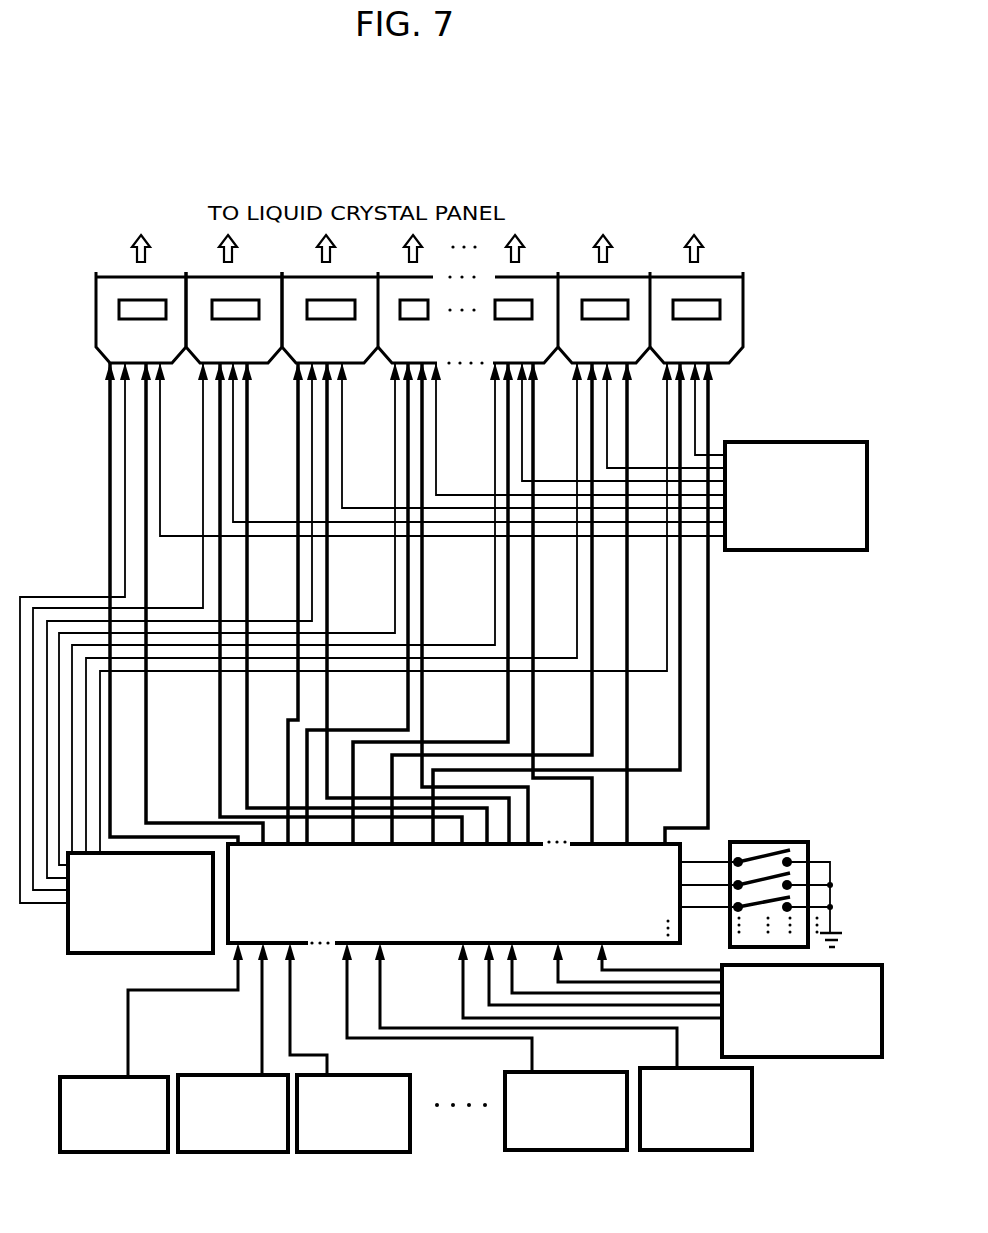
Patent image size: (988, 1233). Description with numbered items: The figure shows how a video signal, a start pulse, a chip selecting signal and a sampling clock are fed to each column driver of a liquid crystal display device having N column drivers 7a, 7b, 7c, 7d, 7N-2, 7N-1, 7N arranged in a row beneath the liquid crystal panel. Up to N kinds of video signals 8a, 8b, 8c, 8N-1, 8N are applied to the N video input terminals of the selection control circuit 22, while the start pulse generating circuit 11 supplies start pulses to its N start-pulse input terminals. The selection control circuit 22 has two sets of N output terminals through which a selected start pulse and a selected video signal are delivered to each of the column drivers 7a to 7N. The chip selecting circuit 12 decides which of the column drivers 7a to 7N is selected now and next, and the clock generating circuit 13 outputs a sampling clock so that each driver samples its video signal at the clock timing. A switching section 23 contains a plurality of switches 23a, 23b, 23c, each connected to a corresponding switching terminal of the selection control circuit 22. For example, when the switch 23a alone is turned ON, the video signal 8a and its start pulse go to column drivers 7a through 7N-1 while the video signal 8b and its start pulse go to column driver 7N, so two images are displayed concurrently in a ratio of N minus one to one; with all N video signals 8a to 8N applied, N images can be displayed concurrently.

The column driver 7a is at (112, 287).
The column driver 7b is at (207, 288).
The column driver 7c is at (305, 288).
The column driver 7d is at (396, 288).
The column driver 7N-2 is at (535, 285).
The column driver 7N-1 is at (623, 285).
The column driver 7N is at (728, 282).
The video signal 8a is at (125, 1153).
The video signal 8b is at (245, 1153).
The video signal 8c is at (368, 1153).
The video signal 8N-1 is at (575, 1151).
The video signal 8N is at (708, 1151).
The start pulse generating circuit 11 is at (797, 1057).
The chip selecting circuit 12 is at (773, 550).
The clock generating circuit 13 is at (93, 953).
The selection control circuit 22 is at (687, 850).
The switching section 23 is at (808, 842).
The switch 23a is at (757, 852).
The switch 23b is at (795, 879).
The switch 23c is at (762, 901).